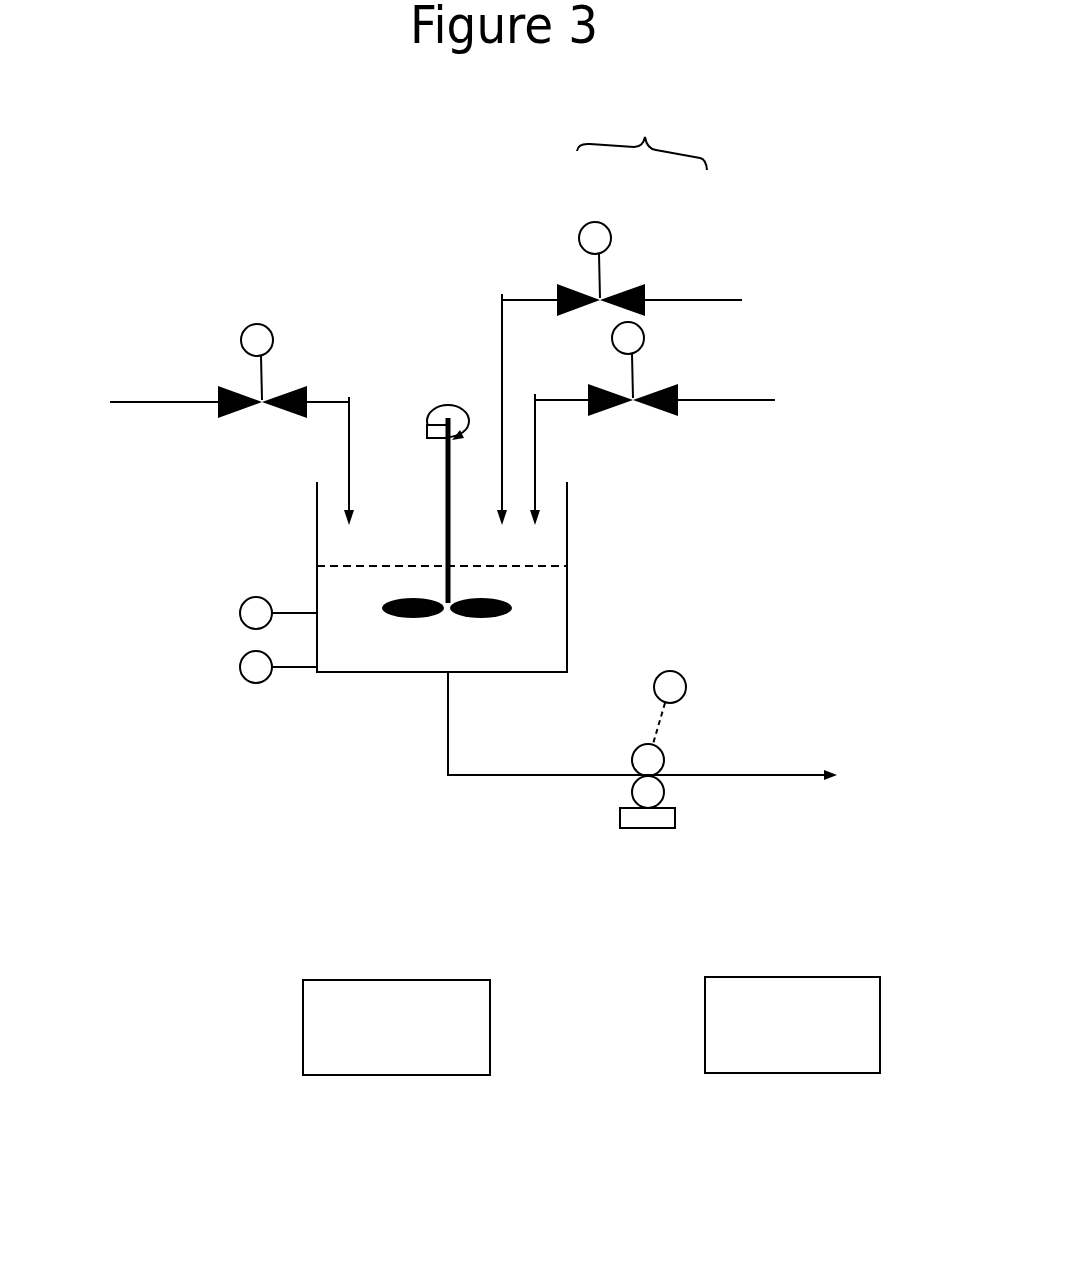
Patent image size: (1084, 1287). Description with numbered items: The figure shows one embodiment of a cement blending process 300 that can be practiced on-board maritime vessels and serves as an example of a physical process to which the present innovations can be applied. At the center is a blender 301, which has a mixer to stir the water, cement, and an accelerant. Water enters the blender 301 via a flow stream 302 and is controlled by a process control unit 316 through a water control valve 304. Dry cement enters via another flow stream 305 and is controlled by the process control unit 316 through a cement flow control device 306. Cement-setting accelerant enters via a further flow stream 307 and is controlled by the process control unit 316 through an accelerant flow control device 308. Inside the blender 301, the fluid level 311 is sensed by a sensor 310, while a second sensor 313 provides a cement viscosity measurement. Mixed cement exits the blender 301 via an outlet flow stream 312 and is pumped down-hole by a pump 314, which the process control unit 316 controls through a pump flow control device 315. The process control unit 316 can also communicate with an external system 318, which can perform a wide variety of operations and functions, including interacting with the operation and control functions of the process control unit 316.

The cement blending process 300 is at (650, 129).
The blender 301 is at (317, 553).
The flow stream 302 is at (148, 442).
The water control valve 304 is at (215, 317).
The flow stream 305 is at (466, 385).
The cement flow control device 306 is at (745, 264).
The flow stream 307 is at (739, 447).
The accelerant flow control device 308 is at (760, 367).
The sensor 310 is at (187, 622).
The fluid level 311 is at (575, 566).
The flow stream 312 is at (518, 757).
The sensor 313 is at (182, 696).
The pump 314 is at (736, 821).
The pump flow control device 315 is at (805, 685).
The process control unit 316 is at (451, 1056).
The external system 318 is at (804, 1054).